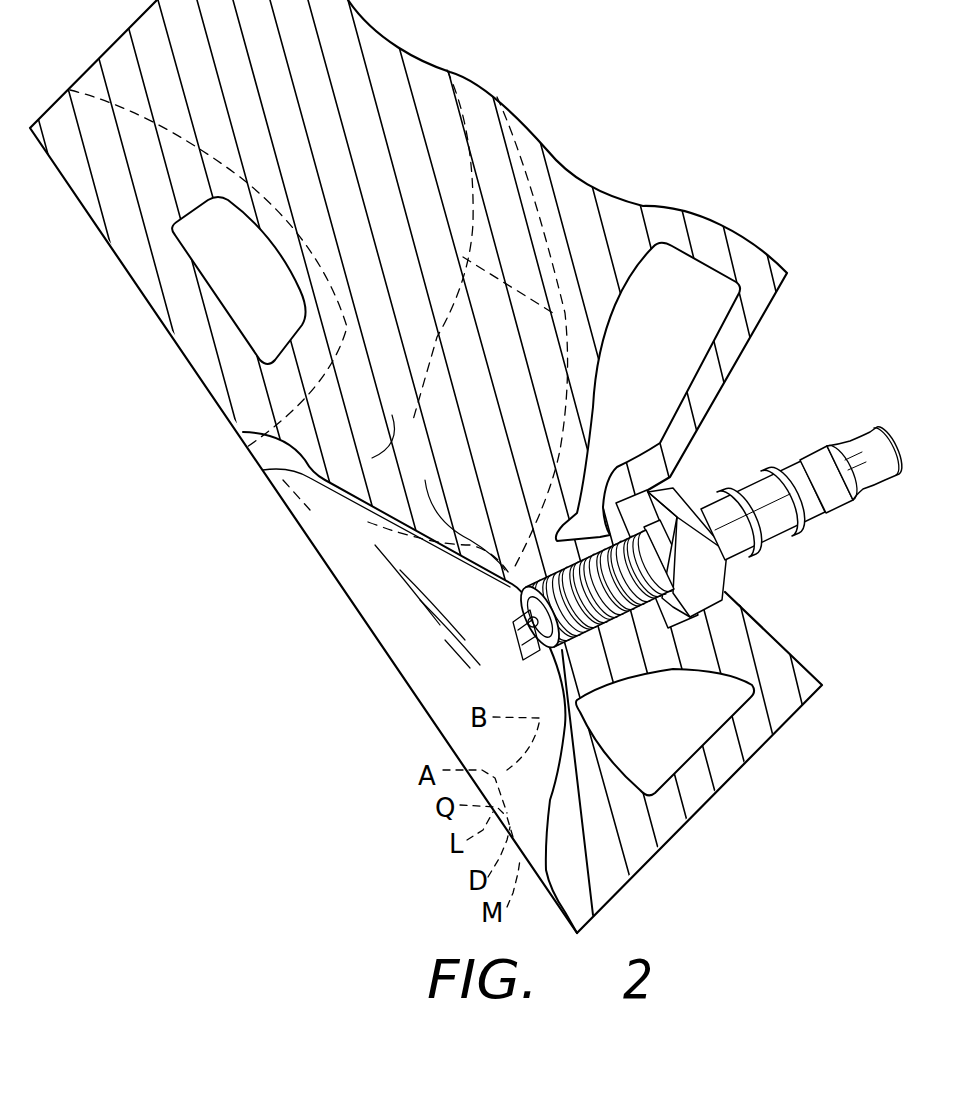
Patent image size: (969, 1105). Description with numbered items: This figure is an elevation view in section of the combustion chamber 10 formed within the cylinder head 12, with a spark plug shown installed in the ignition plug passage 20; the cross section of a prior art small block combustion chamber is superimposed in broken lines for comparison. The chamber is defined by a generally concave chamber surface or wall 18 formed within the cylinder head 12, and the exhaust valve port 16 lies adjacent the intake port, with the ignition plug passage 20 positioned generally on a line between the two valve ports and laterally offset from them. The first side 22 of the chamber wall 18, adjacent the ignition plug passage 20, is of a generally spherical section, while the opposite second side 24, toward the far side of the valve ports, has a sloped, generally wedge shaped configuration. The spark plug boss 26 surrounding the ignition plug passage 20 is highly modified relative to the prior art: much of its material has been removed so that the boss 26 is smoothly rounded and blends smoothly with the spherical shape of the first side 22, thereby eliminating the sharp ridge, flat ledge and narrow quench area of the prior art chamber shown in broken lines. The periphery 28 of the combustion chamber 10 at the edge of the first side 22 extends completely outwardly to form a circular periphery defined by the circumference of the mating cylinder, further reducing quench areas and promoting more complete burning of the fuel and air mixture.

The combustion chamber 10 is at (338, 636).
The cylinder head 12 is at (200, 383).
The exhaust valve port 16 is at (348, 519).
The chamber surface or wall 18 is at (455, 678).
The ignition plug passage 20 is at (510, 600).
The first side 22 is at (562, 770).
The second side 24 is at (322, 486).
The spark plug boss 26 is at (556, 673).
The periphery 28 is at (547, 890).